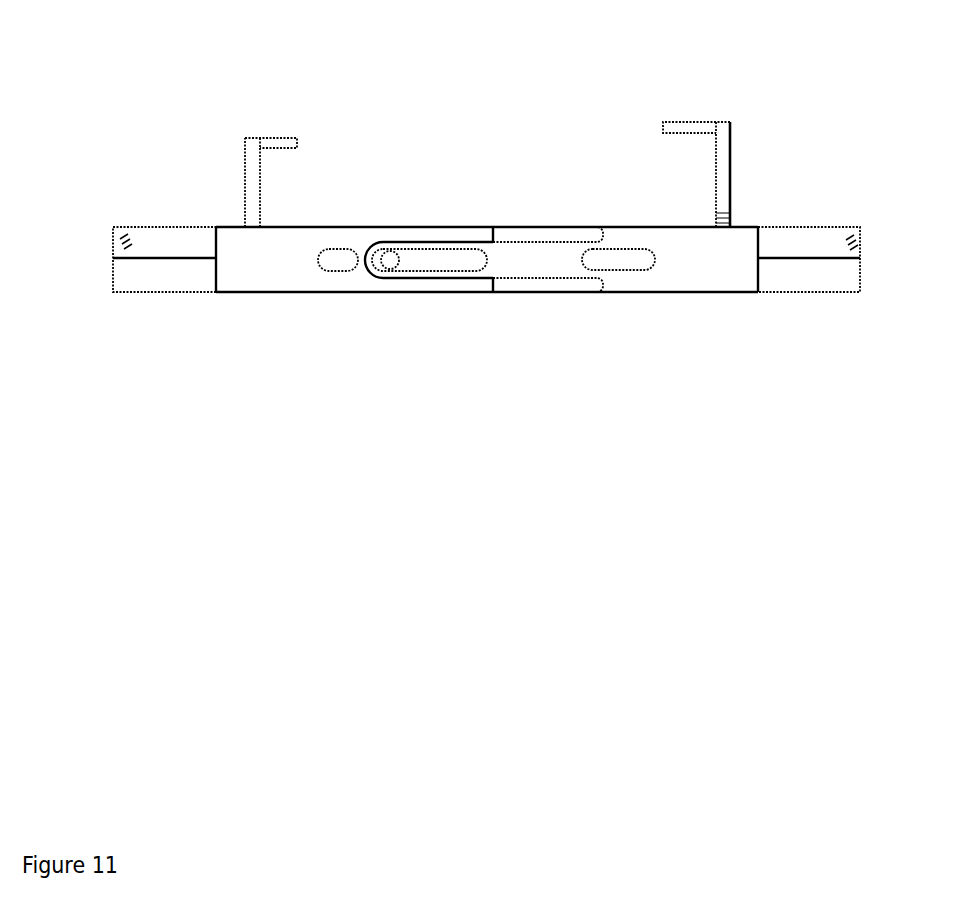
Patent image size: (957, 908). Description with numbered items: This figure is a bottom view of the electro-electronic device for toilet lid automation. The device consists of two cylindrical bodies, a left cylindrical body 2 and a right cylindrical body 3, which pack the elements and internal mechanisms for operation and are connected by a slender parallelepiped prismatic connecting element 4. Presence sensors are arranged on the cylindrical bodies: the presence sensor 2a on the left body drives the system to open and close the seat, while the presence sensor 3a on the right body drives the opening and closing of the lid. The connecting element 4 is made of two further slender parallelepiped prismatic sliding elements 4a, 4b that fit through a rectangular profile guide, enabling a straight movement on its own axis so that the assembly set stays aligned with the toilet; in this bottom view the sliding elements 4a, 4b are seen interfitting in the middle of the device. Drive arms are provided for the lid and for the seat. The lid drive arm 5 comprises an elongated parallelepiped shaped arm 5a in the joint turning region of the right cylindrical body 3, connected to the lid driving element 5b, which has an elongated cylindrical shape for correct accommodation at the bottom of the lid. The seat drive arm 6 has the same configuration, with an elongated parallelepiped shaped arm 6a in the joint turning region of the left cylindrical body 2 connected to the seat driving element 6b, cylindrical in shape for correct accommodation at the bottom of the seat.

The cylindrical body 2 is at (126, 304).
The presence sensor 2a is at (124, 235).
The cylindrical body 3 is at (838, 299).
The presence sensor 3a is at (850, 237).
The connecting element 4 is at (487, 325).
The sliding element 4a is at (680, 274).
The sliding element 4b is at (287, 274).
The lid drive arm 5 is at (697, 128).
The elongated parallelepiped shaped arm 5a is at (733, 178).
The lid driving element 5b is at (657, 127).
The seat drive arm 6 is at (264, 140).
The elongated parallelepiped shaped arm 6a is at (240, 173).
The seat driving element 6b is at (293, 138).